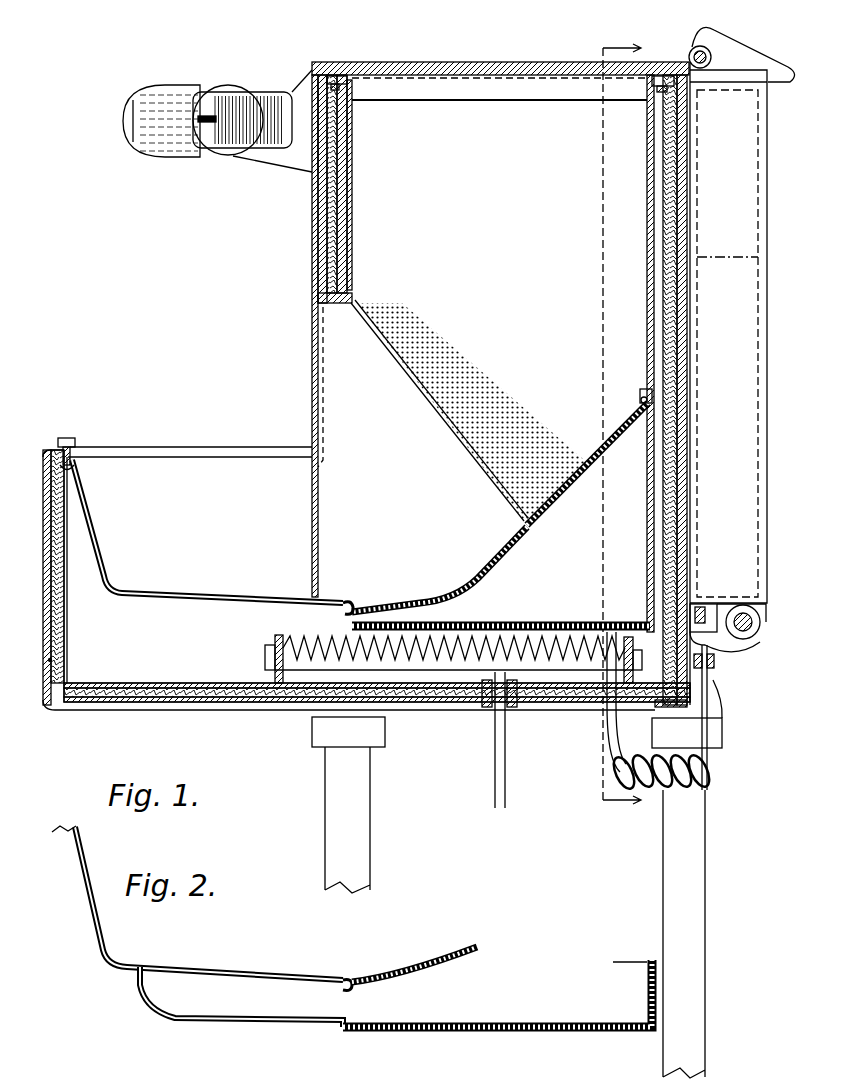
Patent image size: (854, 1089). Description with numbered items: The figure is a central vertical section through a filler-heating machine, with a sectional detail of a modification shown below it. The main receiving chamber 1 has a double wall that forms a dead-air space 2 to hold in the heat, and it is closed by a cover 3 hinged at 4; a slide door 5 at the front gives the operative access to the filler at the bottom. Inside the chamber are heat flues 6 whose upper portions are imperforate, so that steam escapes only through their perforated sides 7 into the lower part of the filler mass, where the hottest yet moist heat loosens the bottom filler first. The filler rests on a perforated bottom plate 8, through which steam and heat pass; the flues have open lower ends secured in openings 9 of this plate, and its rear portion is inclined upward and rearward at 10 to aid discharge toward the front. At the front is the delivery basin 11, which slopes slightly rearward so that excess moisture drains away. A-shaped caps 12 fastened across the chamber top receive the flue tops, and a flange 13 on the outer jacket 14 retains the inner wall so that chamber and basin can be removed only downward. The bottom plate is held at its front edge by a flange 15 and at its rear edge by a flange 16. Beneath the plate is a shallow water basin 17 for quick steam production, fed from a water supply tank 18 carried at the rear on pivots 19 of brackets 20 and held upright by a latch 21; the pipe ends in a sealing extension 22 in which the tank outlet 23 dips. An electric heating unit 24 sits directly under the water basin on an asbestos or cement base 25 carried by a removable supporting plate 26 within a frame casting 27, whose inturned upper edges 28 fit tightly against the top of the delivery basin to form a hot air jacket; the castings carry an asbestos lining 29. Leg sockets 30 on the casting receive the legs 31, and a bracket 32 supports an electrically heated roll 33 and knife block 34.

In FIG. 1, the main receiving chamber 1 is at (380, 415).
In FIG. 1, the dead-air space 2 is at (340, 200).
In FIG. 1, the cover 3 is at (527, 62).
In FIG. 1, the hinge 4 is at (695, 56).
In FIG. 1, the slide door 5 is at (312, 357).
In FIG. 1, the heat flue 6 is at (515, 240).
In FIG. 1, the perforated side 7 is at (440, 362).
In FIG. 1, the bottom plate 8 is at (497, 564).
In FIG. 2, the bottom plate 8 is at (428, 976).
In FIG. 1, the opening 9 is at (560, 500).
In FIG. 1, the inclined rear portion 10 is at (613, 436).
In FIG. 1, the delivery basin 11 is at (205, 525).
In FIG. 2, the delivery basin 11 is at (202, 908).
In FIG. 1, the A-shaped cap 12 is at (458, 90).
In FIG. 1, the flange 13 is at (334, 82).
In FIG. 1, the outer jacket 14 is at (318, 182).
In FIG. 1, the front flange 15 is at (341, 612).
In FIG. 1, the rear flange 16 is at (640, 398).
In FIG. 1, the water basin 17 is at (558, 622).
In FIG. 2, the water basin 17 is at (510, 1025).
In FIG. 1, the water supply tank 18 is at (728, 336).
In FIG. 1, the pivot 19 is at (760, 616).
In FIG. 1, the bracket 20 is at (746, 646).
In FIG. 1, the latch 21 is at (779, 69).
In FIG. 1, the sealing extension 22 is at (725, 668).
In FIG. 1, the outlet 23 is at (713, 603).
In FIG. 1, the electric heating unit 24 is at (582, 656).
In FIG. 1, the base 25 is at (454, 705).
In FIG. 1, the supporting plate 26 is at (423, 704).
In FIG. 1, the frame casting 27 is at (50, 660).
In FIG. 1, the flanged upper edge 28 is at (72, 440).
In FIG. 1, the asbestos lining 29 is at (66, 595).
In FIG. 1, the leg socket 30 is at (326, 736).
In FIG. 1, the leg 31 is at (338, 770).
In FIG. 1, the bracket 32 is at (278, 85).
In FIG. 1, the roll 33 is at (181, 90).
In FIG. 1, the knife block 34 is at (232, 98).